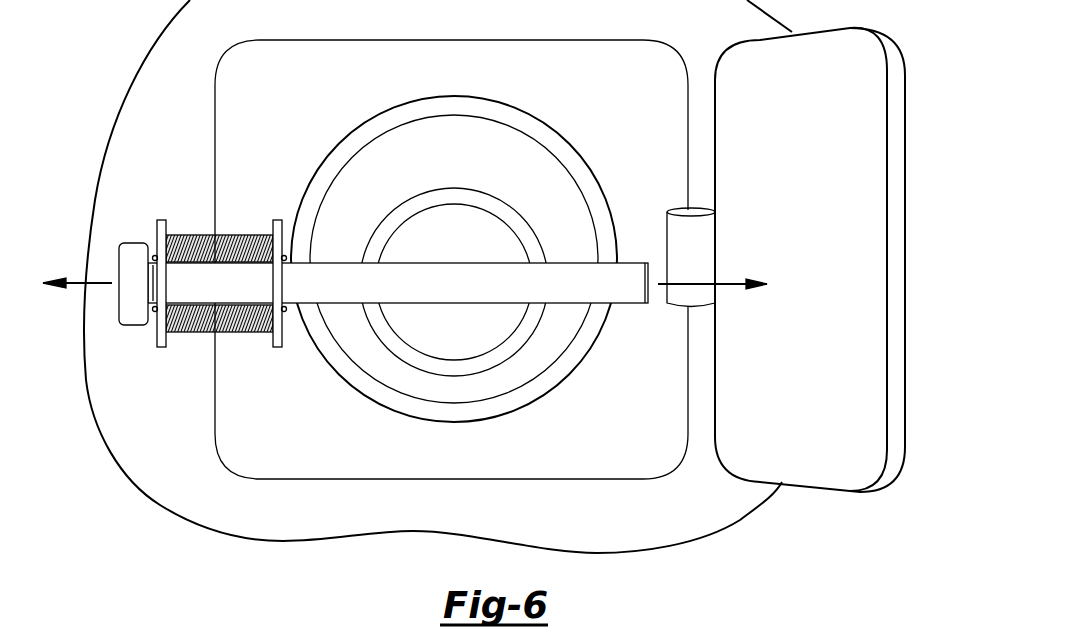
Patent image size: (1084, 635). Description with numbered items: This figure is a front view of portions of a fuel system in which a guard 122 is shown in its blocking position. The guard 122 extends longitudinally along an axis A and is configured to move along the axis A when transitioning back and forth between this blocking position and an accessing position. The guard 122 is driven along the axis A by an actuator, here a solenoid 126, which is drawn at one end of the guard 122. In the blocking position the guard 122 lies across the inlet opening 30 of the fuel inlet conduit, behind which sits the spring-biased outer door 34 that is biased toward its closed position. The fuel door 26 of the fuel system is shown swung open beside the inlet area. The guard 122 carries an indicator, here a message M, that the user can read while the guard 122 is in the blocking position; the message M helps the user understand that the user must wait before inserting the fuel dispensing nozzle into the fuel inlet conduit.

The fuel door 26 is at (830, 137).
The inlet opening 30 is at (511, 378).
The outer door 34 is at (422, 327).
The guard 122 is at (404, 263).
The message M is at (441, 250).
The solenoid 126 is at (188, 235).
The axis A is at (737, 283).